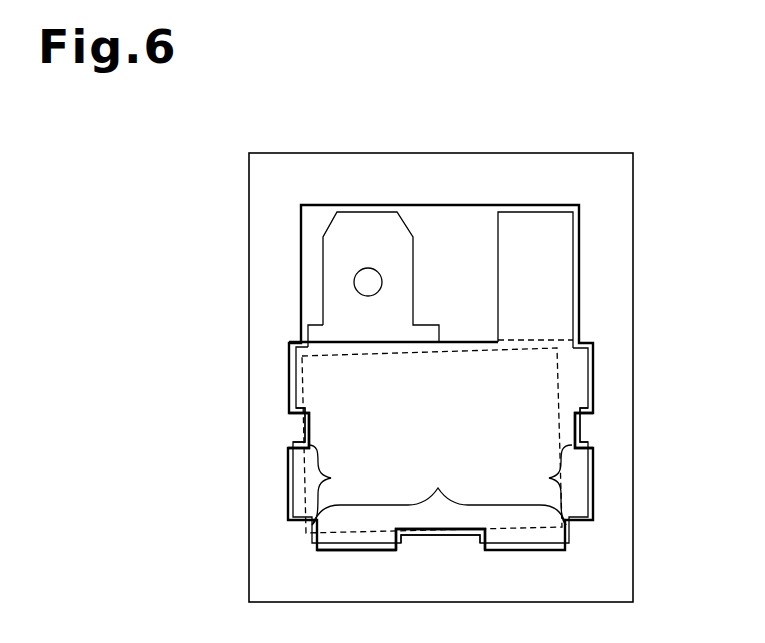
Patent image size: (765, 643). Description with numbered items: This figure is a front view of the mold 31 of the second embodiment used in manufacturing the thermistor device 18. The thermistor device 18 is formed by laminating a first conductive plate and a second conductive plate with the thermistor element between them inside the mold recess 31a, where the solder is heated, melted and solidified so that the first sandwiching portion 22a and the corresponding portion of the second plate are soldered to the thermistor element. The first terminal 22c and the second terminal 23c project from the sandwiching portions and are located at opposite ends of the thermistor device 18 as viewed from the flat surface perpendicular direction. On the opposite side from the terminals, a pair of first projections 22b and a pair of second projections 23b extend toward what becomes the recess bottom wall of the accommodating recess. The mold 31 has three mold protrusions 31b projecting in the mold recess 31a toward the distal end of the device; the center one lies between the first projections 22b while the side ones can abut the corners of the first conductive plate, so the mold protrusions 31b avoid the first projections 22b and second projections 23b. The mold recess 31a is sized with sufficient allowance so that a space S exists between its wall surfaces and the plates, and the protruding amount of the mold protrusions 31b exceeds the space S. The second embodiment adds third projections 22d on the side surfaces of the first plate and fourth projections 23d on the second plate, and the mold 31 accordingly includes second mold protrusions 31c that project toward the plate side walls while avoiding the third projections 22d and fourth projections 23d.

The thermistor device 18 is at (578, 287).
The first sandwiching portion 22a is at (315, 338).
The first projections 22b is at (488, 550).
The first terminal 22c is at (540, 212).
The third projections 22d is at (289, 398).
The second projections 23b is at (471, 567).
The second terminal 23c is at (368, 212).
The fourth projections 23d is at (446, 443).
The mold 31 is at (249, 268).
The mold recess 31a is at (297, 375).
The mold protrusions 31b is at (448, 532).
The second mold protrusions 31c is at (440, 485).
The space S is at (357, 550).